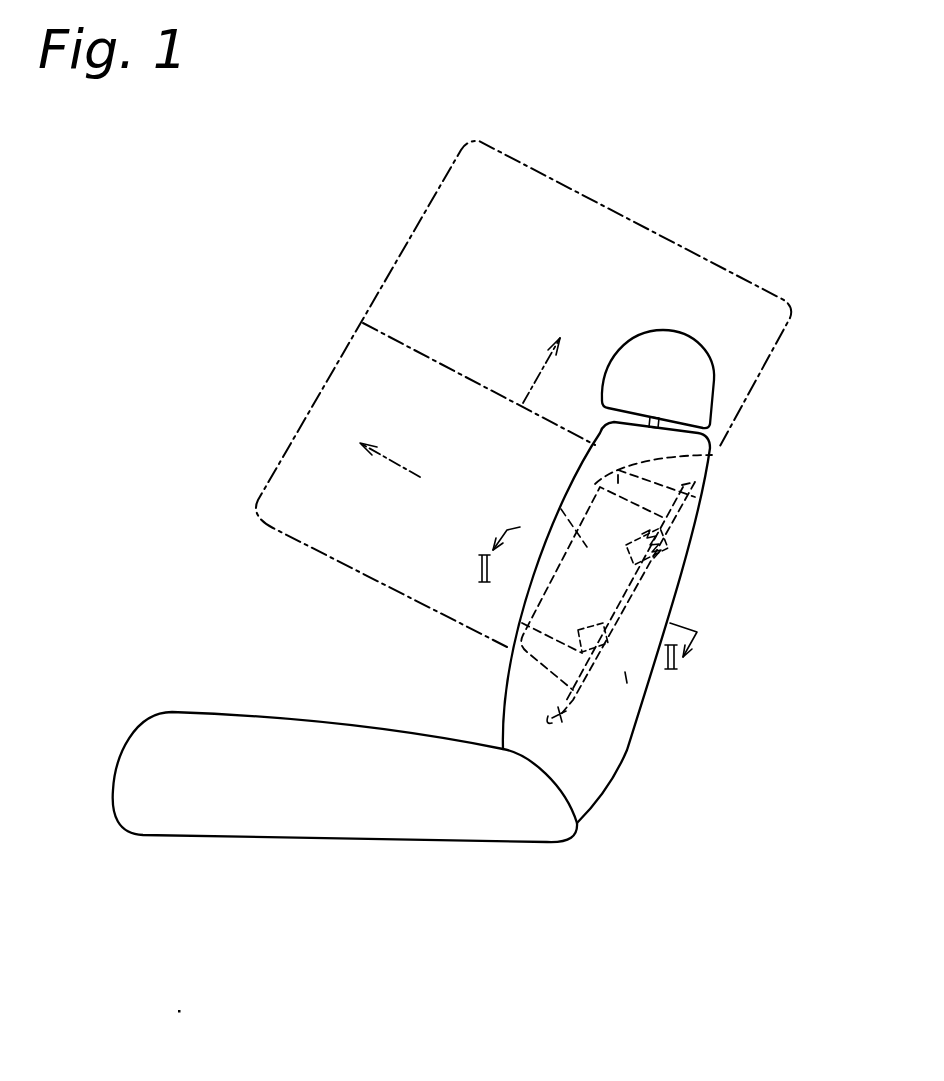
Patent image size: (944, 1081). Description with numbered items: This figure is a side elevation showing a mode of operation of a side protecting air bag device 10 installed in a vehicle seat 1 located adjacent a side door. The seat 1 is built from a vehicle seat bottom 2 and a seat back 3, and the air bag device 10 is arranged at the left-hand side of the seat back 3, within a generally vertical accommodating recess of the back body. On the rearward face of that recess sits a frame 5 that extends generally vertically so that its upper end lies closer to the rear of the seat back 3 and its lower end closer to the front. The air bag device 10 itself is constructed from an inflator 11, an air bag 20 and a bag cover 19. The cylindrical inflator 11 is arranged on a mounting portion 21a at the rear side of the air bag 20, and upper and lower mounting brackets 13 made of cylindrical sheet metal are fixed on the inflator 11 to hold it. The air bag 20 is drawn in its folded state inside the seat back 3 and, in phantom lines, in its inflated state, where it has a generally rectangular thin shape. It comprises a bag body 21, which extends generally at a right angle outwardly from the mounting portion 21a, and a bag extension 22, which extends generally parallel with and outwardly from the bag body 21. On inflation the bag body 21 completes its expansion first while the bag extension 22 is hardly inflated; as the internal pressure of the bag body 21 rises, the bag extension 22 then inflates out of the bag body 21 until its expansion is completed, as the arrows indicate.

The seat 1 is at (449, 667).
The vehicle seat bottom 2 is at (378, 810).
The seat back 3 is at (690, 533).
The frame 5 is at (562, 716).
The side protecting air bag device 10 is at (625, 672).
The inflator 11 is at (663, 573).
The mounting bracket 13 is at (660, 548).
The bag cover 19 is at (561, 509).
The air bag 20 is at (320, 150).
The bag body 21 is at (343, 312).
The mounting portion 21a is at (680, 617).
The bag extension 22 is at (448, 127).